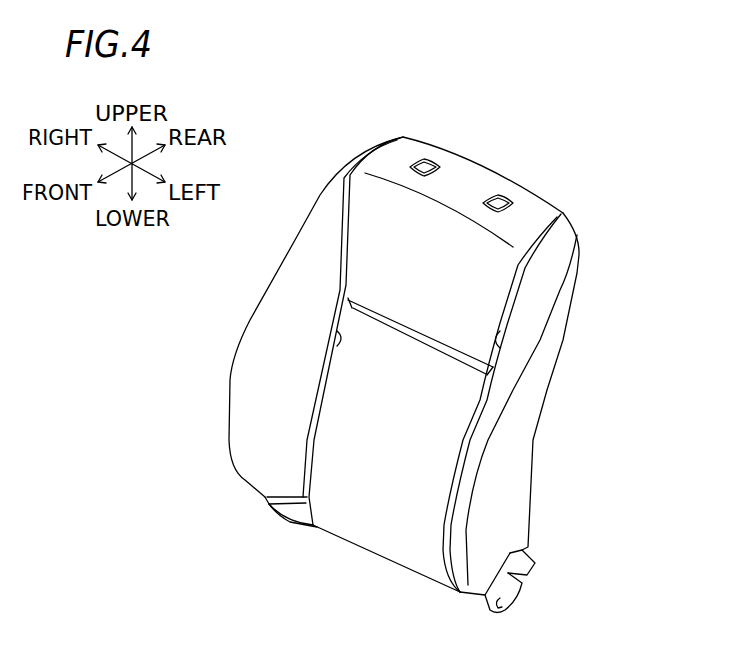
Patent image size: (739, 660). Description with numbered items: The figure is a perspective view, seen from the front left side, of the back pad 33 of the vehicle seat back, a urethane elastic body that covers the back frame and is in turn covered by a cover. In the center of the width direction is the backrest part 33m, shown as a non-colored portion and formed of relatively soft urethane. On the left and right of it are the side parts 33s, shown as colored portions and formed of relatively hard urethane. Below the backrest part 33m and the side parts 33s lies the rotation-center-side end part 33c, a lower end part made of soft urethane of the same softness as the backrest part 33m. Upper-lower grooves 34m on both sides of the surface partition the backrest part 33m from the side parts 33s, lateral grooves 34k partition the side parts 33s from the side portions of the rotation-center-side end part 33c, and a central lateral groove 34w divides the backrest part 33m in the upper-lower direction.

The back pad 33 is at (541, 190).
The backrest part 33m is at (437, 254).
The side parts 33s is at (307, 272).
The upper-lower grooves 34m is at (337, 342).
The central lateral groove 34w is at (389, 302).
The lateral grooves 34k is at (270, 495).
The rotation-center-side end part 33c is at (296, 512).